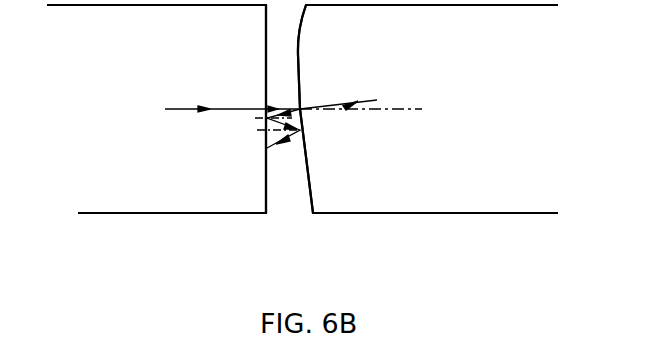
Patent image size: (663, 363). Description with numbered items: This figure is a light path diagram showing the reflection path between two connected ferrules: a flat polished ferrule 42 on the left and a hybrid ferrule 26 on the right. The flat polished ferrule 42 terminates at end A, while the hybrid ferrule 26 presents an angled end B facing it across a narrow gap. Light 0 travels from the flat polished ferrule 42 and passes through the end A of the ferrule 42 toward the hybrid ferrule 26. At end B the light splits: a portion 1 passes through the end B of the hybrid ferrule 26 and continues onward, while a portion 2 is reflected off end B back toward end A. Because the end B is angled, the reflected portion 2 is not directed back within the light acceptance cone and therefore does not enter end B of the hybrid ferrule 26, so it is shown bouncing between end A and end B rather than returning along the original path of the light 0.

The flat polished ferrule 42 is at (156, 109).
The hybrid ferrule 26 is at (428, 109).
The end of the flat polished ferrule A is at (264, 126).
The end of the hybrid ferrule B is at (312, 126).
The light 0 is at (232, 94).
The portion of light passing through end B 1 is at (361, 88).
The reflected portion of light 2 is at (277, 147).